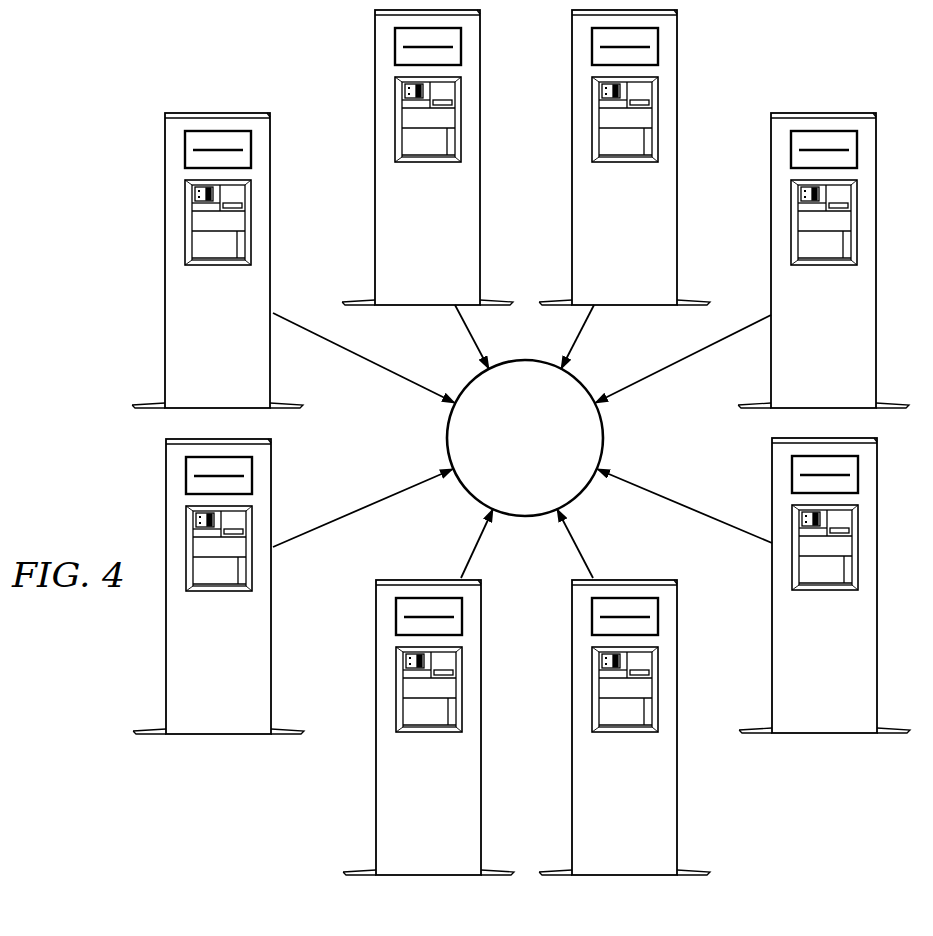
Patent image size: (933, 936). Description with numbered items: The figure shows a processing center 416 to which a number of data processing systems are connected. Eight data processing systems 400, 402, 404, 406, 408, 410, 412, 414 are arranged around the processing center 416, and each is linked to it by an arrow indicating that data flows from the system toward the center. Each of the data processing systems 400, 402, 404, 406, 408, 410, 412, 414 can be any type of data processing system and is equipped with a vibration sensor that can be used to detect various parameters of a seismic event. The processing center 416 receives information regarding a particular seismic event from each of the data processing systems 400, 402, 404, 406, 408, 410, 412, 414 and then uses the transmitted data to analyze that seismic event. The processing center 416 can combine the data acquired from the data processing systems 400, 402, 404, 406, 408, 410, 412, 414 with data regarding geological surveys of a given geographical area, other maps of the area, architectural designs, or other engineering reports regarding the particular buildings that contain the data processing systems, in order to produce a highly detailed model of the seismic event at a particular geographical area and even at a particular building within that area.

The data processing system 400 is at (215, 113).
The data processing system 402 is at (216, 737).
The data processing system 404 is at (376, 805).
The data processing system 406 is at (677, 803).
The data processing system 408 is at (825, 736).
The data processing system 410 is at (826, 113).
The data processing system 412 is at (677, 73).
The data processing system 414 is at (375, 73).
The processing center 416 is at (603, 436).